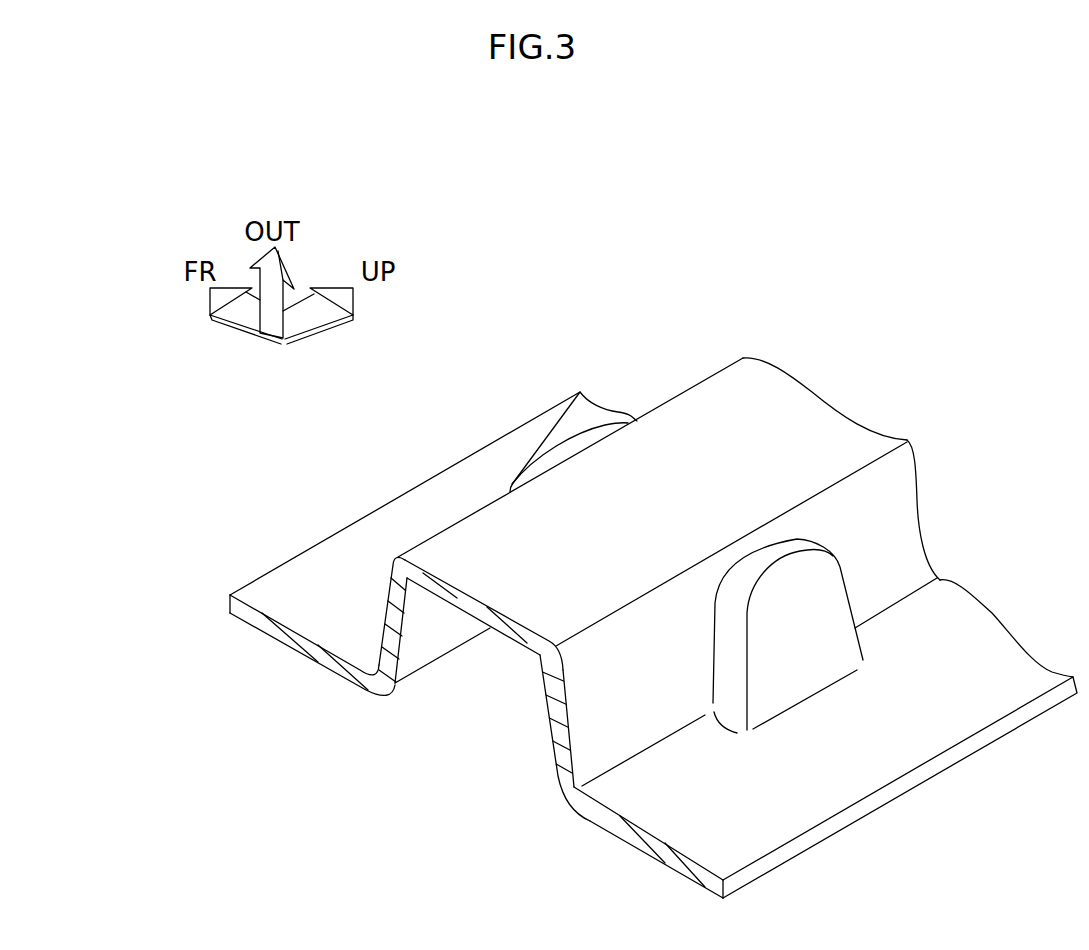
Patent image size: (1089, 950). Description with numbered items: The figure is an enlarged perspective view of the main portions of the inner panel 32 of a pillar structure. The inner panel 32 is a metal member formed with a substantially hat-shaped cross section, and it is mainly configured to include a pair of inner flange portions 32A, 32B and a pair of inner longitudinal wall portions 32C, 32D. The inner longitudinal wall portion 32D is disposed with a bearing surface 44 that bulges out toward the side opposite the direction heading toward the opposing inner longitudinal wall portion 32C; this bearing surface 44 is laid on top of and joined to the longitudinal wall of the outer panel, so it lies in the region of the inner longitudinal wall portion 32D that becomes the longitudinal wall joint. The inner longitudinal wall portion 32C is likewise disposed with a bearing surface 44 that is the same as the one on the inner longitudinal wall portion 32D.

The inner panel 32 is at (698, 383).
The inner flange portion 32A is at (328, 557).
The inner flange portion 32B is at (767, 825).
The inner longitudinal wall portion 32C is at (387, 583).
The inner longitudinal wall portion 32D is at (552, 734).
The bearing surface 44 is at (550, 450).